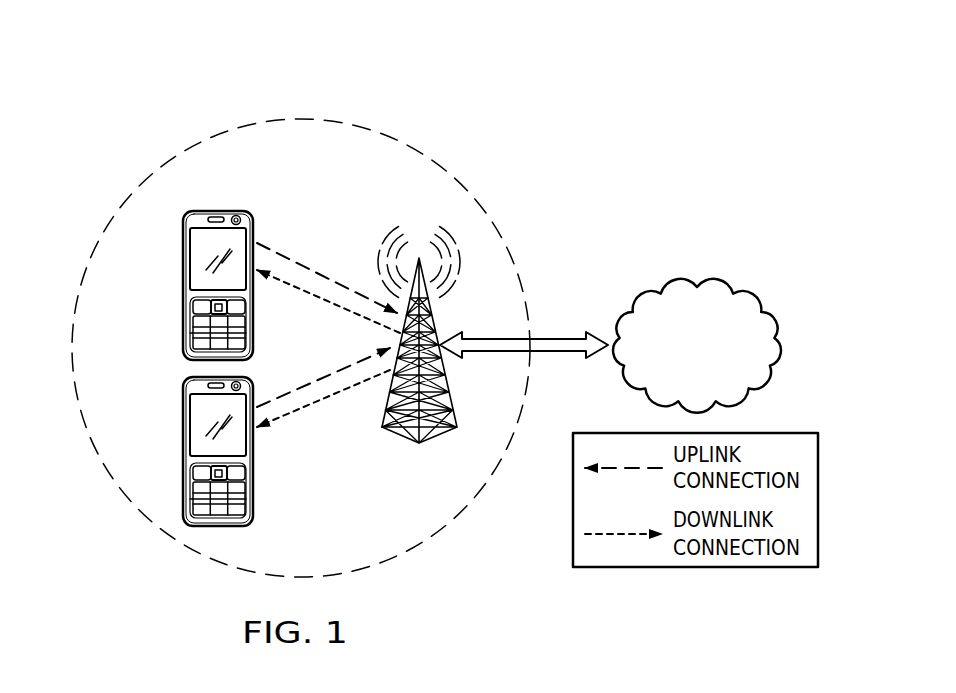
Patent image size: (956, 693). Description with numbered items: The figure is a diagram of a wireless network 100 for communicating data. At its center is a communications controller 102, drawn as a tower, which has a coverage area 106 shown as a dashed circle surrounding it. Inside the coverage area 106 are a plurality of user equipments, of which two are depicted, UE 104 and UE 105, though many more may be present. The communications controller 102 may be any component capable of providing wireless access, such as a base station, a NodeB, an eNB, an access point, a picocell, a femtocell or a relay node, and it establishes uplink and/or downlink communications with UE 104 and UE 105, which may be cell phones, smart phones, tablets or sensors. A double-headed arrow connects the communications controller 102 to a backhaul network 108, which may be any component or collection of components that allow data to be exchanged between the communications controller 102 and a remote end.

The network 100 is at (580, 196).
The communications controller 102 is at (438, 432).
The UE 104 is at (183, 285).
The UE 105 is at (183, 452).
The coverage area 106 is at (186, 147).
The backhaul network 108 is at (698, 276).